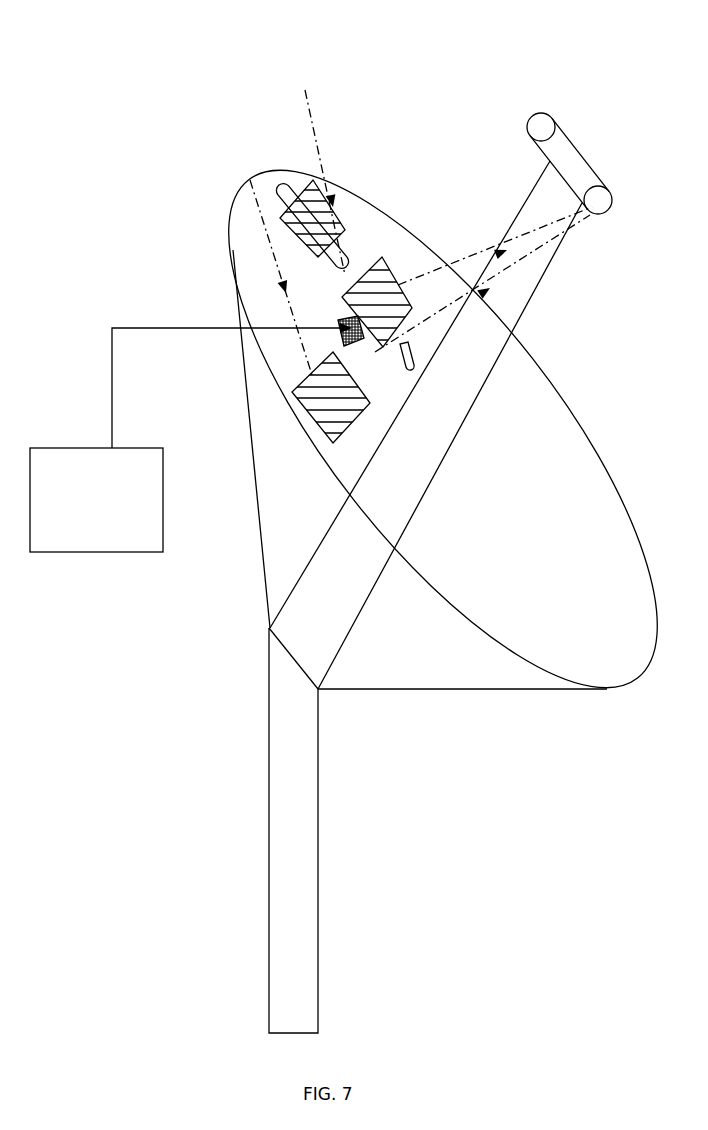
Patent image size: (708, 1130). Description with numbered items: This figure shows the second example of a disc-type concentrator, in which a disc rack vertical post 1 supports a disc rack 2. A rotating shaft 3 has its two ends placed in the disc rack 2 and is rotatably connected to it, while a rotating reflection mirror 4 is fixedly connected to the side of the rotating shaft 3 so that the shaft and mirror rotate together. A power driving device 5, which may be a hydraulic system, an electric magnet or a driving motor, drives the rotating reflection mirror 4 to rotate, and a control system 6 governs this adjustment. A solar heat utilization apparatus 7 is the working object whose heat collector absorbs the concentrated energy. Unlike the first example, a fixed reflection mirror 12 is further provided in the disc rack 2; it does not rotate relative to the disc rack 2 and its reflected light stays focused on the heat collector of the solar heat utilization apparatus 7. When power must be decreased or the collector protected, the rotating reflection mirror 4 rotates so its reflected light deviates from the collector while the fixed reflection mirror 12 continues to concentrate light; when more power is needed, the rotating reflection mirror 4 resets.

The disc rack vertical post 1 is at (353, 830).
The disc rack 2 is at (433, 479).
The rotating shaft 3 is at (396, 435).
The rotating reflection mirror 4 is at (482, 519).
The power driving device 5 is at (286, 247).
The control system 6 is at (186, 378).
The solar heat utilization apparatus 7 is at (569, 125).
The fixed reflection mirror 12 is at (281, 456).